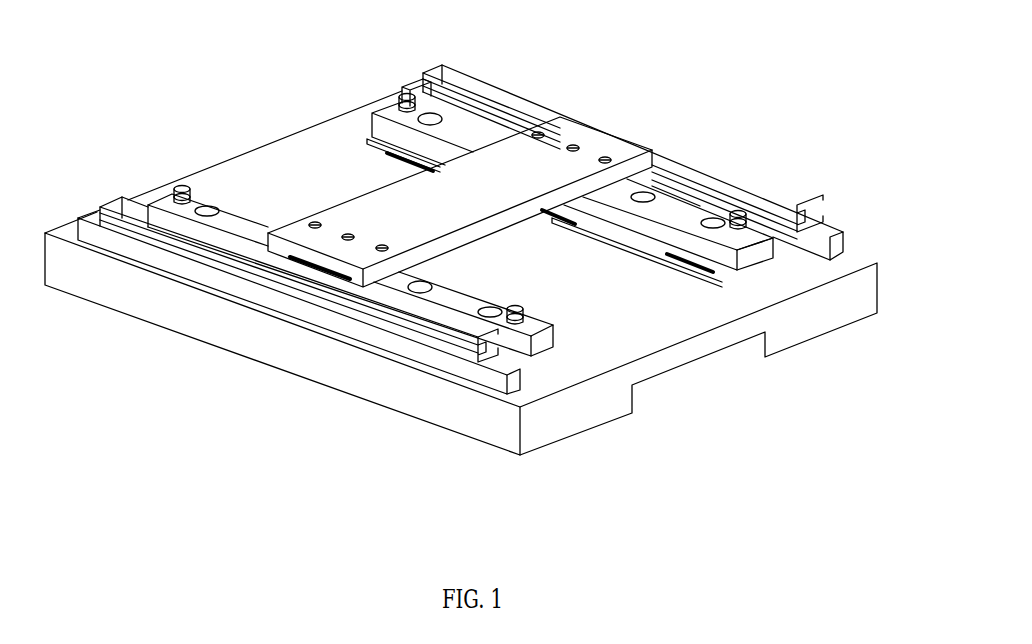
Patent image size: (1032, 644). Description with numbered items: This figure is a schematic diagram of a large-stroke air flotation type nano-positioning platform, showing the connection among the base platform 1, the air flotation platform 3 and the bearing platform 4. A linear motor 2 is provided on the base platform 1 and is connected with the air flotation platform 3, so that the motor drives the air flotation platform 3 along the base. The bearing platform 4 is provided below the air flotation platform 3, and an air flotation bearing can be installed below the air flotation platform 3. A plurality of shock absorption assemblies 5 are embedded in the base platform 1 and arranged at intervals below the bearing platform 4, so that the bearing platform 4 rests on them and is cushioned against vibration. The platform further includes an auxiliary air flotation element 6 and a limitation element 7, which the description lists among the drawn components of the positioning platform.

The base platform 1 is at (827, 335).
The linear motor 2 is at (503, 100).
The air flotation platform 3 is at (590, 138).
The bearing platform 4 is at (687, 208).
The shock absorption assembly 5 is at (717, 270).
The auxiliary air flotation element 6 is at (488, 313).
The limitation element 7 is at (378, 271).